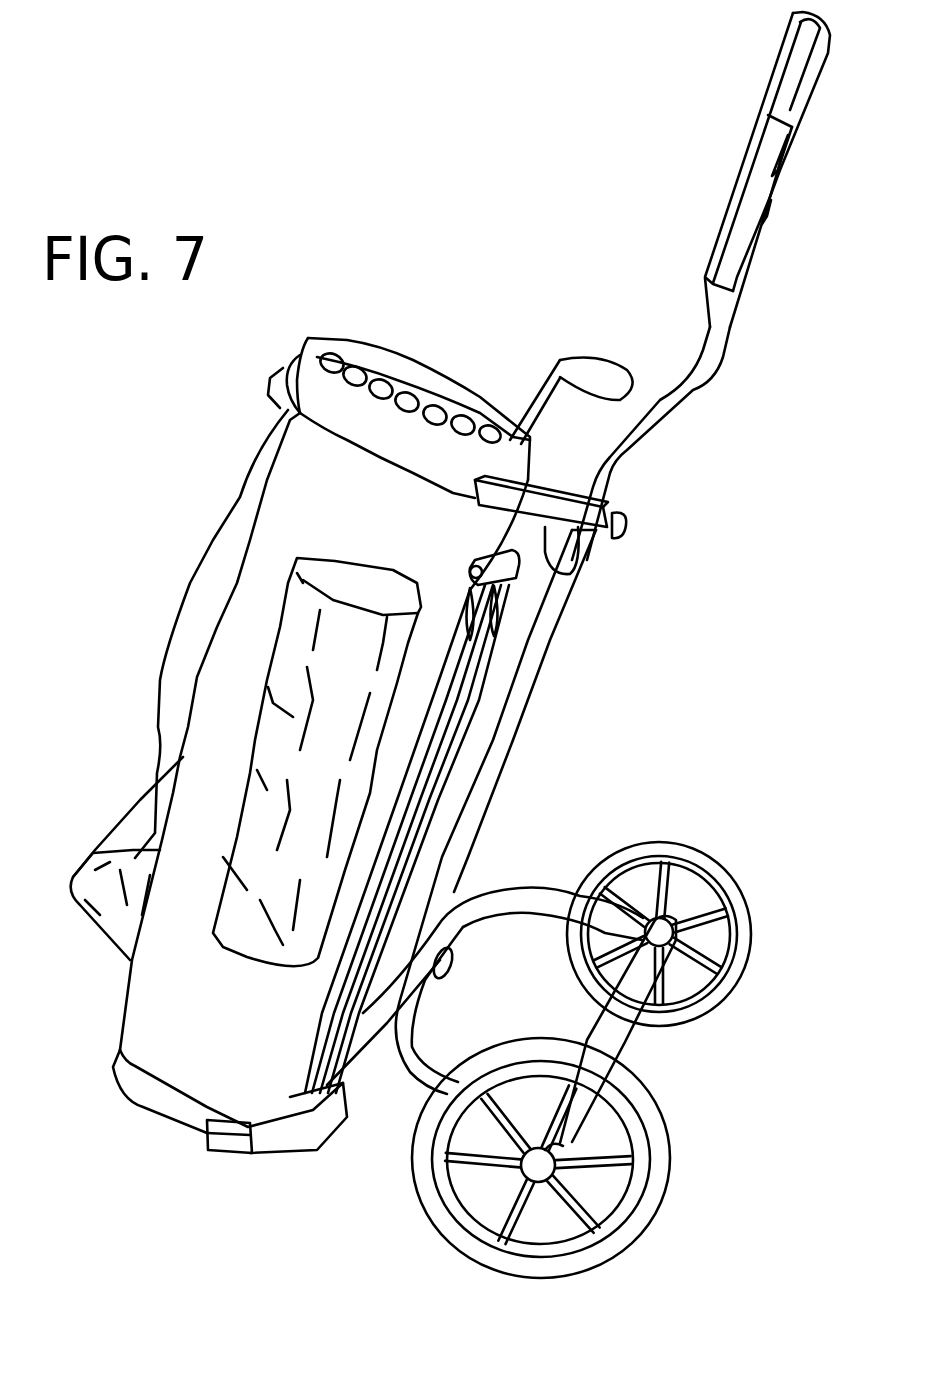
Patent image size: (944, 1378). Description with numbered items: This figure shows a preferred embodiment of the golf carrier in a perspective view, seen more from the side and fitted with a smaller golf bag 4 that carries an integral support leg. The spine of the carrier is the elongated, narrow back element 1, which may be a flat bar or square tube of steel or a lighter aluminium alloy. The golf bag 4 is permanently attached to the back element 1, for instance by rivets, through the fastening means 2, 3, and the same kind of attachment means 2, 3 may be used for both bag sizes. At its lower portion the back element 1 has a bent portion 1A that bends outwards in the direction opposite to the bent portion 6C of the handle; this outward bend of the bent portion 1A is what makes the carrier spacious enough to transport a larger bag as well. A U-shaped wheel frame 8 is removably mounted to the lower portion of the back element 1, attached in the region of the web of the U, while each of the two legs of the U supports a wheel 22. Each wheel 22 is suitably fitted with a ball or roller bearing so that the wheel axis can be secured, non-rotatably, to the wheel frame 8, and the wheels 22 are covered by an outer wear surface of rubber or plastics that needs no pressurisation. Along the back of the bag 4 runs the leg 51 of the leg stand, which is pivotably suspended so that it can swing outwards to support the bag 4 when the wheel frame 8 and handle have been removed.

The back element 1 is at (525, 682).
The bent portion 1A is at (360, 1033).
The fastening means 2 is at (580, 488).
The fastening means 3 is at (302, 1147).
The golf bag 4 is at (273, 517).
The bent portion of the handle 6C is at (667, 400).
The wheel frame 8 is at (642, 1046).
The wheel 22 is at (633, 1230).
The leg 51 is at (470, 728).